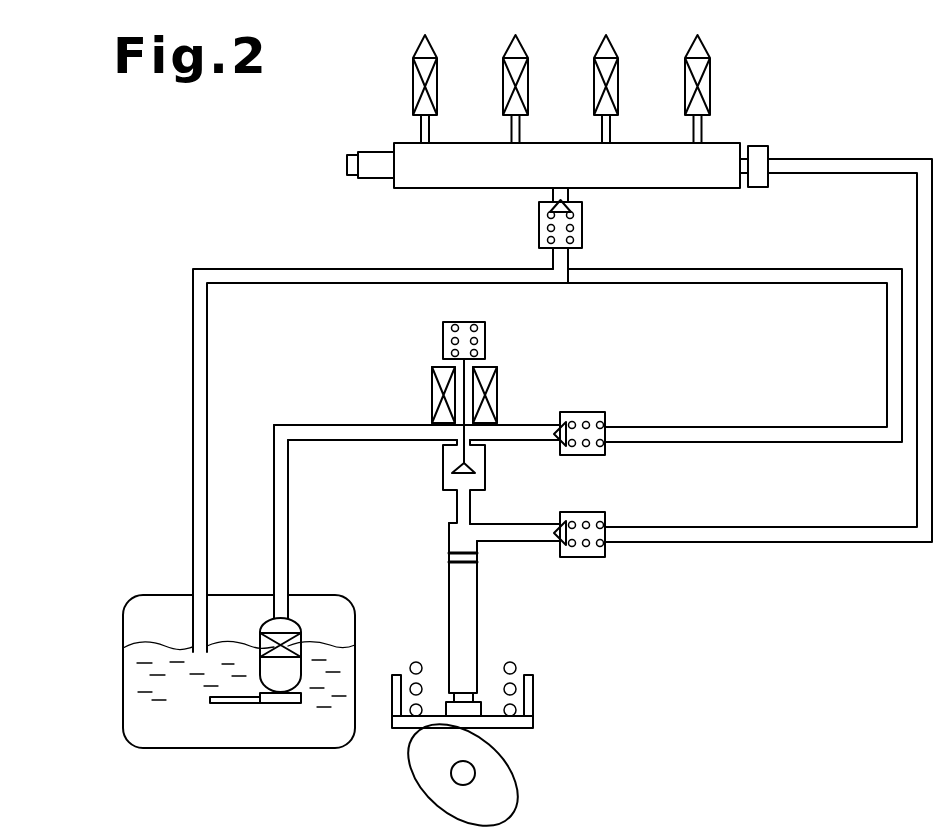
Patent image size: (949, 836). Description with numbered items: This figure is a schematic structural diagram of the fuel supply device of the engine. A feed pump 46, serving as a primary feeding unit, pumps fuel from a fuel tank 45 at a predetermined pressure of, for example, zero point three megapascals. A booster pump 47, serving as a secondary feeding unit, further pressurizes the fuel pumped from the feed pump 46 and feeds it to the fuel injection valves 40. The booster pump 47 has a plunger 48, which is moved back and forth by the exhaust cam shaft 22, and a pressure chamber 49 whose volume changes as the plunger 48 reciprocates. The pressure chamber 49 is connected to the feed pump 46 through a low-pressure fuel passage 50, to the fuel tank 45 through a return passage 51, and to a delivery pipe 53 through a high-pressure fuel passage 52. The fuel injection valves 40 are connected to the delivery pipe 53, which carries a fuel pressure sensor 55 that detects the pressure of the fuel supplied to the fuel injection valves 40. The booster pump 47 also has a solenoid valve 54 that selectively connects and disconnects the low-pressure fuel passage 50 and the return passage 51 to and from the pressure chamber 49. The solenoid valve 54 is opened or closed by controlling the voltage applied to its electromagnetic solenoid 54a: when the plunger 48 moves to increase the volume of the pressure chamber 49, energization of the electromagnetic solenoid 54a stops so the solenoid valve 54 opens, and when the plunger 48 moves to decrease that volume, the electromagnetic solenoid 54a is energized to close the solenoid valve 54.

The fuel injection valves 40 is at (503, 51).
The delivery pipe 53 is at (452, 188).
The fuel pressure sensor 55 is at (347, 163).
The solenoid valve 54 is at (425, 340).
The electromagnetic solenoid 54a is at (430, 390).
The return passage 51 is at (737, 428).
The high-pressure fuel passage 52 is at (745, 527).
The booster pump 47 is at (425, 615).
The pressure chamber 49 is at (458, 538).
The plunger 48 is at (460, 643).
The exhaust cam shaft 22 is at (463, 773).
The low-pressure fuel passage 50 is at (282, 510).
The fuel tank 45 is at (137, 595).
The feed pump 46 is at (283, 682).